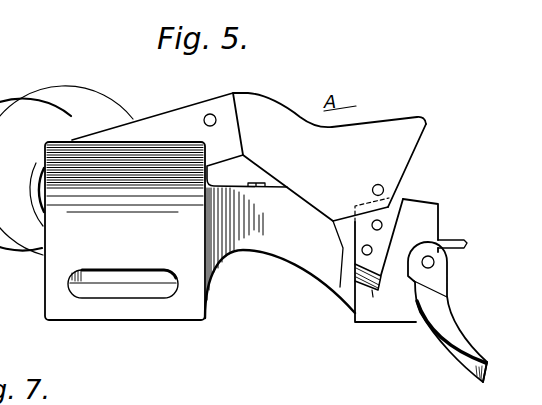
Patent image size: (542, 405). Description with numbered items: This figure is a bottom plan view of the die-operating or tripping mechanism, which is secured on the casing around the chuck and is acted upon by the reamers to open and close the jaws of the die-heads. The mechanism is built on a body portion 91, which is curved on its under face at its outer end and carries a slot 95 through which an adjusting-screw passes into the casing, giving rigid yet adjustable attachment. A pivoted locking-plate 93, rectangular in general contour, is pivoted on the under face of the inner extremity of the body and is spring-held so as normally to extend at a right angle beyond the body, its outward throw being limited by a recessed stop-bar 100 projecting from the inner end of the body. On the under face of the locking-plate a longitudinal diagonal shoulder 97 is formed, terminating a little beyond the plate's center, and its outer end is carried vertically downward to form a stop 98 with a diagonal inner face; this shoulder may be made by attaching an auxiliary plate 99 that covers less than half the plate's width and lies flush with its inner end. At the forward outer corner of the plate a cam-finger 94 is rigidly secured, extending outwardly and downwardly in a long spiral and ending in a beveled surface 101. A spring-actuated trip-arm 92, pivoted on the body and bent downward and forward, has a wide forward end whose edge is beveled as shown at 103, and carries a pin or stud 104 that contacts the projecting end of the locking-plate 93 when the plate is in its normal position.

The body portion 91 is at (125, 231).
The spring-actuated trip-arm 92 is at (329, 157).
The pivoted locking-plate 93 is at (396, 260).
The cam-finger 94 is at (440, 315).
The slot 95 is at (160, 266).
The longitudinal diagonal shoulder 97 is at (384, 269).
The stop 98 is at (373, 295).
The auxiliary plate 99 is at (373, 229).
The recessed stop-bar 100 is at (460, 240).
The beveled surface 101 is at (487, 374).
The beveled forward edge 103 is at (405, 171).
The pin or stud 104 is at (378, 184).